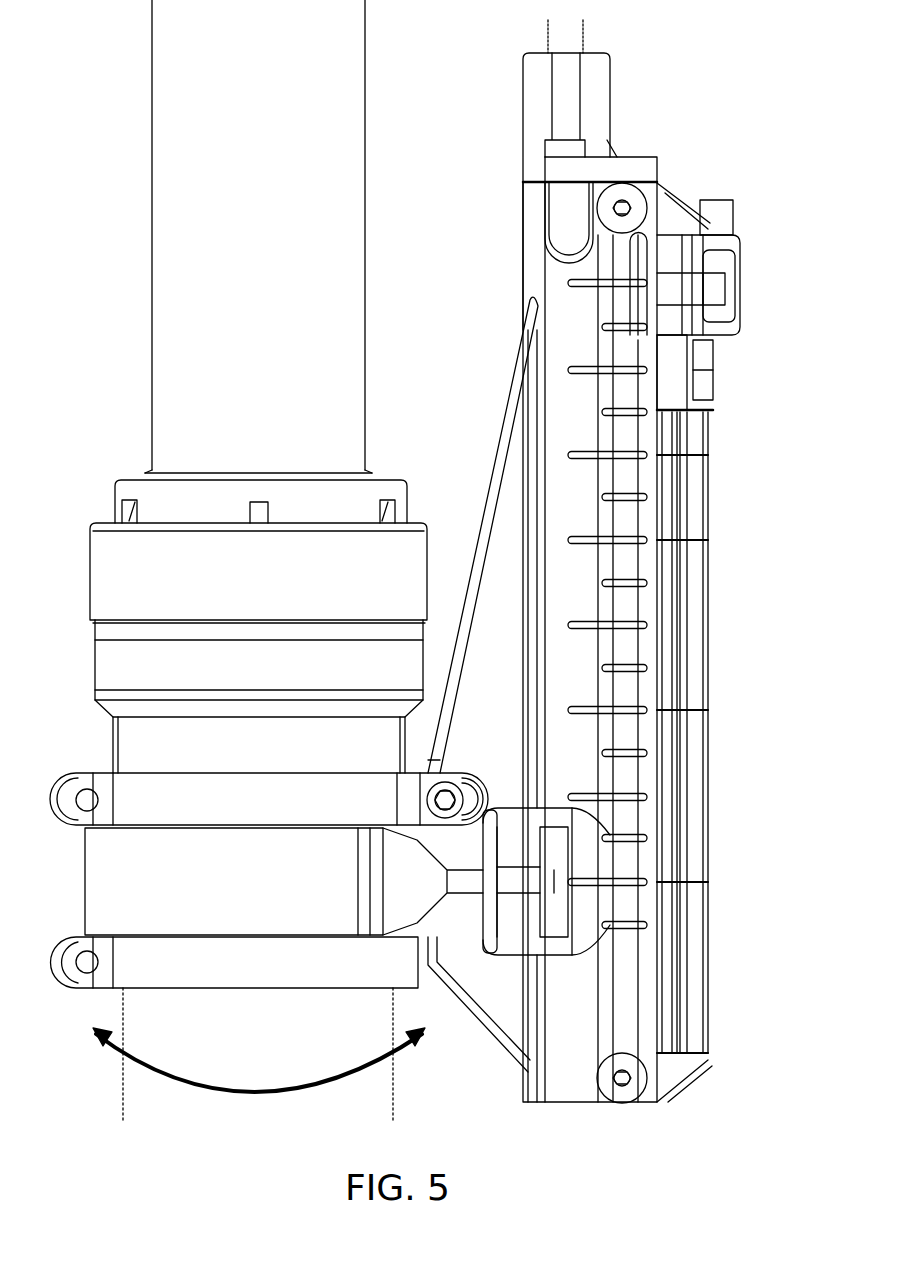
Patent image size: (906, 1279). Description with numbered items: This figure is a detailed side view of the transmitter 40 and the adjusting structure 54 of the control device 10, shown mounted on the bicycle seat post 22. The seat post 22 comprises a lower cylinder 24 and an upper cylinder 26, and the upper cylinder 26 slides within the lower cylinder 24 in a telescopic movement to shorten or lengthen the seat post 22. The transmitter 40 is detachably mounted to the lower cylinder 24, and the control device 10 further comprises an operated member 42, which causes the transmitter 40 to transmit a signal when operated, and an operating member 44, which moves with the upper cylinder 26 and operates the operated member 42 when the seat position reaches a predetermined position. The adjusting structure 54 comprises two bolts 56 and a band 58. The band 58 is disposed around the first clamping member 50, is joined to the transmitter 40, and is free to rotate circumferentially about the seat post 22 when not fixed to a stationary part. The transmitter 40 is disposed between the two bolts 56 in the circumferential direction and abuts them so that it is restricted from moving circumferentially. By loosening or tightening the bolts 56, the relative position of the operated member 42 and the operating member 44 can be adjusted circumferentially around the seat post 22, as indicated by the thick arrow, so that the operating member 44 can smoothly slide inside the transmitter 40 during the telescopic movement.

The control device 10 is at (755, 1128).
The bicycle seat post 22 is at (75, 408).
The lower cylinder 24 is at (123, 1112).
The upper cylinder 26 is at (151, 288).
The transmitter 40 is at (731, 702).
The operated member 42 is at (740, 240).
The operating member 44 is at (585, 32).
The first clamping member 50 is at (60, 783).
The adjusting structure 54 is at (496, 776).
The bolts 56 is at (452, 790).
The band 58 is at (85, 888).